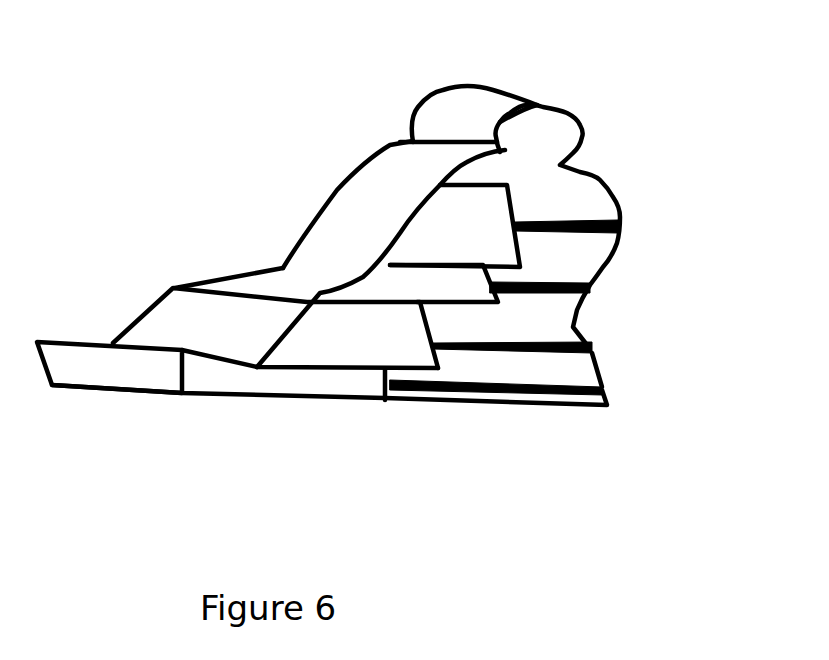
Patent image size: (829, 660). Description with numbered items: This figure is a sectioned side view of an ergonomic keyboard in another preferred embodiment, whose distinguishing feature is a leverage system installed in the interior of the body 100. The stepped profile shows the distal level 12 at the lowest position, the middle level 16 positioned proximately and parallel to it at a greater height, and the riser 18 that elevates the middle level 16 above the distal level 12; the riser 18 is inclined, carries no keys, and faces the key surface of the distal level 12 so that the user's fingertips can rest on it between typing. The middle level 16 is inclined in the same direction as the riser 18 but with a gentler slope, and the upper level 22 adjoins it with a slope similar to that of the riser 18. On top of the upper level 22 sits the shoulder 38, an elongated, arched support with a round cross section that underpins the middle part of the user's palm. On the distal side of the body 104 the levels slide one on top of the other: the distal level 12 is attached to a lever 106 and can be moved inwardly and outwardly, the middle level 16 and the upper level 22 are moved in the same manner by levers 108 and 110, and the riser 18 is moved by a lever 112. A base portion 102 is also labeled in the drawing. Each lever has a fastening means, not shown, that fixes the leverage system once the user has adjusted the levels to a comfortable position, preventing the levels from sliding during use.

The distal level 12 is at (100, 343).
The middle level 16 is at (257, 285).
The riser 18 is at (175, 307).
The upper level 22 is at (342, 220).
The shoulder 38 is at (470, 105).
The body 100 is at (567, 190).
The base (struck) 102 is at (527, 350).
The body 104 is at (621, 225).
The lever 106 is at (560, 407).
The lever 108 is at (560, 285).
The lever 110 is at (587, 217).
The lever 112 is at (550, 340).